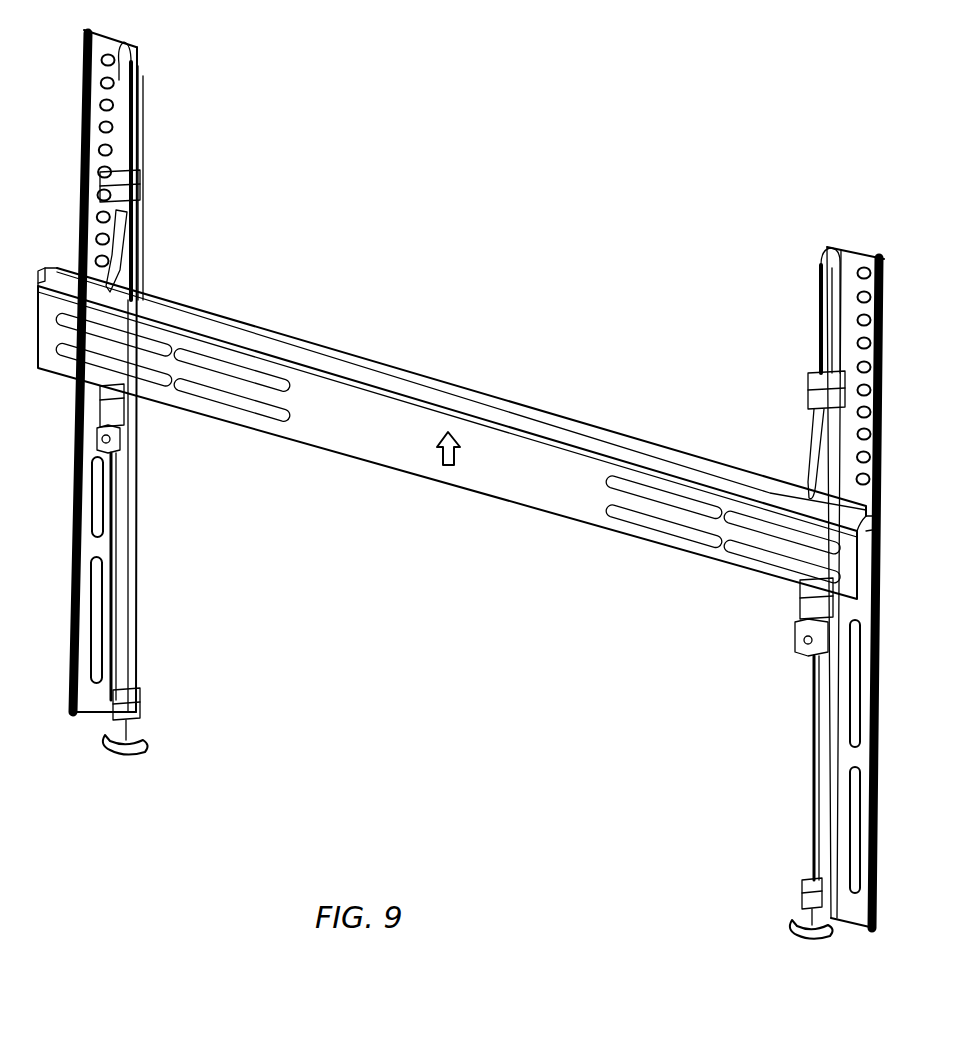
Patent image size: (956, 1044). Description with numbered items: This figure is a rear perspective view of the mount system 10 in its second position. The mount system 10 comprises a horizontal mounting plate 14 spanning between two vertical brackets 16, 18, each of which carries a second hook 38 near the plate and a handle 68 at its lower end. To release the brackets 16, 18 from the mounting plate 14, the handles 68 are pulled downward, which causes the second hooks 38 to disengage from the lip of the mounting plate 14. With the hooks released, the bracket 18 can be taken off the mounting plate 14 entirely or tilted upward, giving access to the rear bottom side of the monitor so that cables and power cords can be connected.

The mount system 10 is at (443, 130).
The mounting plate 14 is at (500, 478).
The bracket 16 is at (840, 918).
The bracket 18 is at (88, 717).
The second hook 38 is at (137, 412).
The handle 68 is at (128, 757).